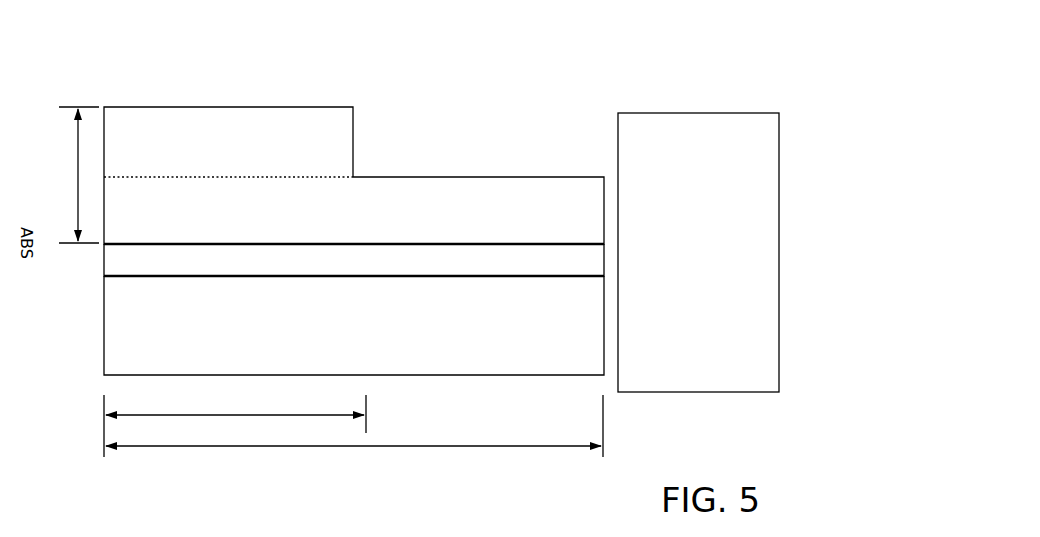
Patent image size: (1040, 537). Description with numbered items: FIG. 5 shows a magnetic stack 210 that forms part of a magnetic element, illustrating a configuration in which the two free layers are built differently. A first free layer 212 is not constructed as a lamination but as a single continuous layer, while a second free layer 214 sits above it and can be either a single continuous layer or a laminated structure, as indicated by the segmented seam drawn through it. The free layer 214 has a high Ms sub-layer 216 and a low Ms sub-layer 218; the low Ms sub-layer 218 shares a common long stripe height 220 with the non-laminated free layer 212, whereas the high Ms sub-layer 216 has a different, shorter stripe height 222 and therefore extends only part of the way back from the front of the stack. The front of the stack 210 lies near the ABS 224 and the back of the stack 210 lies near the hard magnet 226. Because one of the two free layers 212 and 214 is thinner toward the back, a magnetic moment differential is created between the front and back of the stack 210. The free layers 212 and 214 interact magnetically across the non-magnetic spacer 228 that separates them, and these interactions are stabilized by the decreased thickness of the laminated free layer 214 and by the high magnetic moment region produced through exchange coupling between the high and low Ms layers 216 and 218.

The magnetic stack 210 is at (682, 47).
The first free layer 212 is at (354, 325).
The second free layer 214 is at (72, 175).
The high Ms sub-layer 216 is at (228, 142).
The low Ms sub-layer 218 is at (354, 210).
The long stripe height 220 is at (354, 432).
The shorter stripe height 222 is at (235, 426).
The ABS 224 is at (38, 105).
The hard magnet 226 is at (698, 252).
The non-magnetic spacer 228 is at (354, 260).